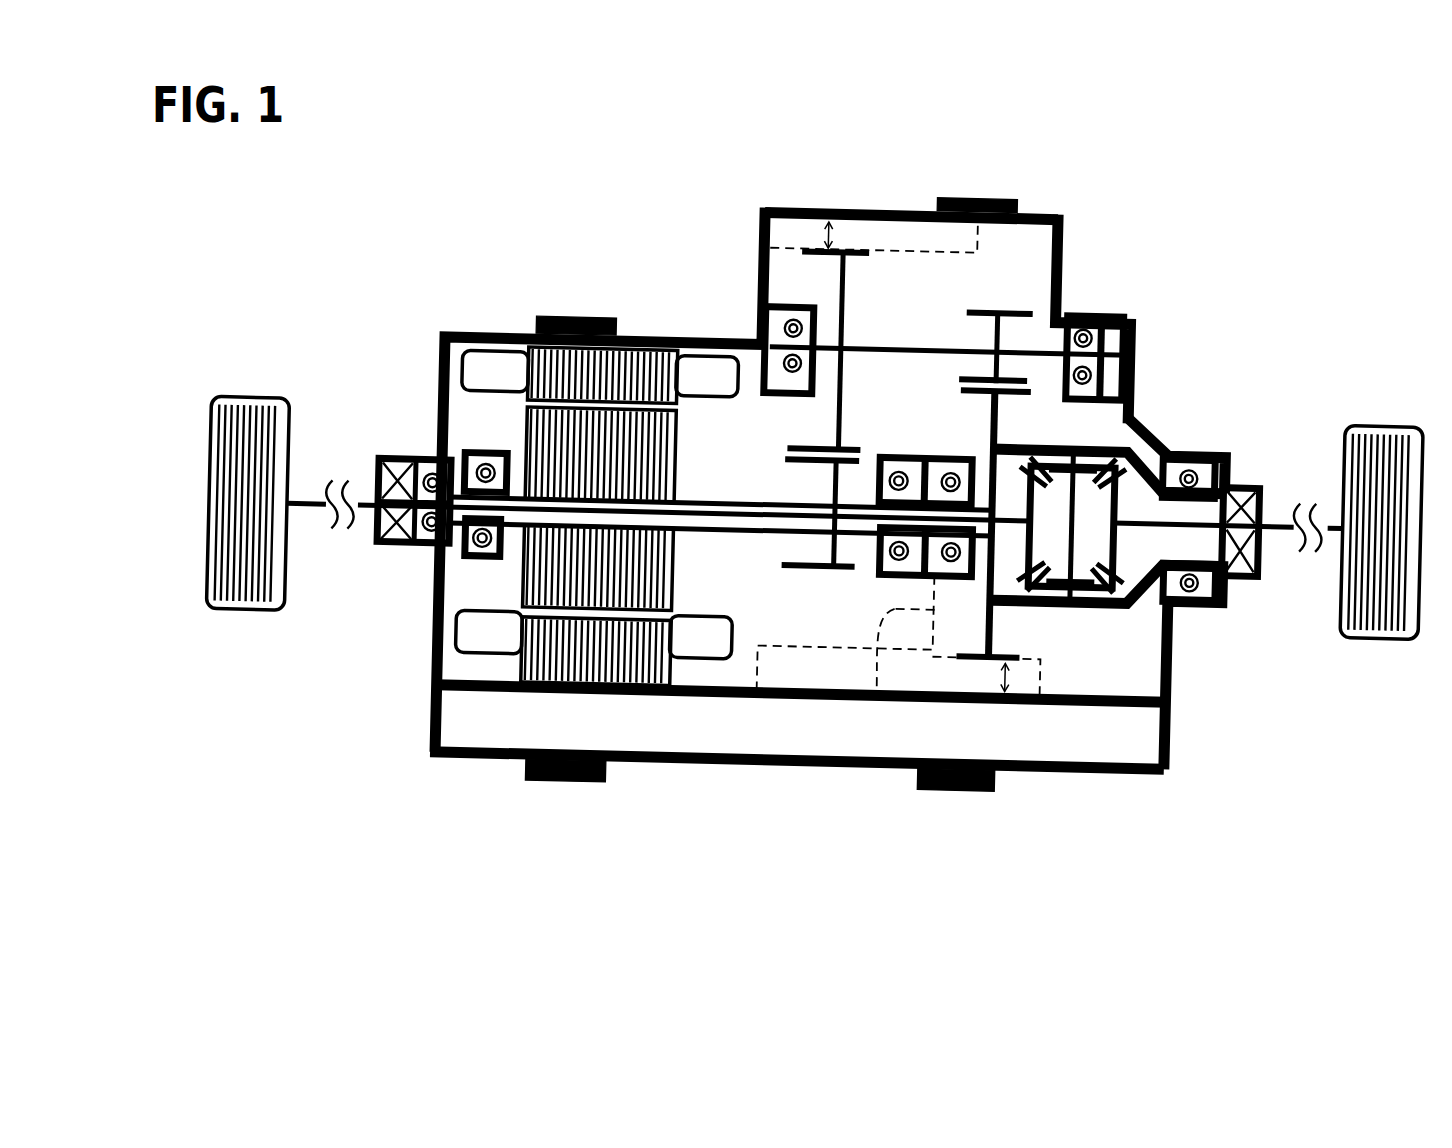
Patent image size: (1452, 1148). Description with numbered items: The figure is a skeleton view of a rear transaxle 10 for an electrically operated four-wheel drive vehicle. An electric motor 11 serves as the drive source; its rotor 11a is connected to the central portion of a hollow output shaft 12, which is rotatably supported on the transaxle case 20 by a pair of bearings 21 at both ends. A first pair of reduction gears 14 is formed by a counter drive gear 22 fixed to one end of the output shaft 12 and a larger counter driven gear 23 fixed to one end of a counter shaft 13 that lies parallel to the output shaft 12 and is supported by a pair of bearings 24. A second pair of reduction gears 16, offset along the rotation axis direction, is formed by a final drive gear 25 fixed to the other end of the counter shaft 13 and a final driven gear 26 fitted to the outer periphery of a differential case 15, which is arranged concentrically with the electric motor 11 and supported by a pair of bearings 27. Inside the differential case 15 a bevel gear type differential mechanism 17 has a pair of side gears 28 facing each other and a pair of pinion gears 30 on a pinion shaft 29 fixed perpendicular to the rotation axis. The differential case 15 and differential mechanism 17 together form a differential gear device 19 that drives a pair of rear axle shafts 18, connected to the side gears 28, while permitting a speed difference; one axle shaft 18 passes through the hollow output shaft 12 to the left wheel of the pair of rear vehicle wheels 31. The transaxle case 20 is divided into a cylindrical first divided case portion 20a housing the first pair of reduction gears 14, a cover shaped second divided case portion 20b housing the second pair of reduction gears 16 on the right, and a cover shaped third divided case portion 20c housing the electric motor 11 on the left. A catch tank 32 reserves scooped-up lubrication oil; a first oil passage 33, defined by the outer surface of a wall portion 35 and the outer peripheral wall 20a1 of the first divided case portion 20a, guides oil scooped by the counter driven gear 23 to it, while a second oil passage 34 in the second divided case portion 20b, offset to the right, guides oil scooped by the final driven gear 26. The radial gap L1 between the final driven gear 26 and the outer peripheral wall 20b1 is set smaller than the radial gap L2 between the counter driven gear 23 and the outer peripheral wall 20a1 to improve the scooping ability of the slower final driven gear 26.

The rear transaxle 10 is at (1217, 291).
The electric motor 11 is at (496, 481).
The rotor 11a is at (506, 519).
The output shaft 12 is at (662, 662).
The counter shaft 13 is at (833, 296).
The first pair of reduction gears 14 is at (713, 237).
The differential case 15 is at (1135, 570).
The second pair of reduction gears 16 is at (871, 296).
The differential mechanism 17 is at (816, 436).
The rear axle shafts 18 is at (809, 588).
The differential gear device 19 is at (1215, 679).
The transaxle case 20 is at (825, 537).
The first divided case portion 20a is at (782, 560).
The outer peripheral wall 20a1 is at (912, 191).
The second divided case portion 20b is at (1103, 665).
The outer peripheral wall 20b1 is at (842, 773).
The third divided case portion 20c is at (775, 837).
The bearings 21 is at (647, 632).
The counter drive gear 22 is at (806, 678).
The counter driven gear 23 is at (738, 192).
The bearings 24 is at (890, 300).
The final drive gear 25 is at (1024, 269).
The final driven gear 26 is at (990, 627).
The bearings 27 is at (1153, 373).
The side gears 28 is at (1134, 662).
The pinion shaft 29 is at (1076, 681).
The pinion gears 30 is at (1110, 570).
The rear vehicle wheels 31 is at (811, 648).
The catch tank 32 is at (668, 814).
The first oil passage 33 is at (810, 240).
The second oil passage 34 is at (970, 660).
The wall portion 35 is at (886, 680).
The length of radial gap L1 is at (1013, 690).
The length of radial gap L2 is at (827, 224).